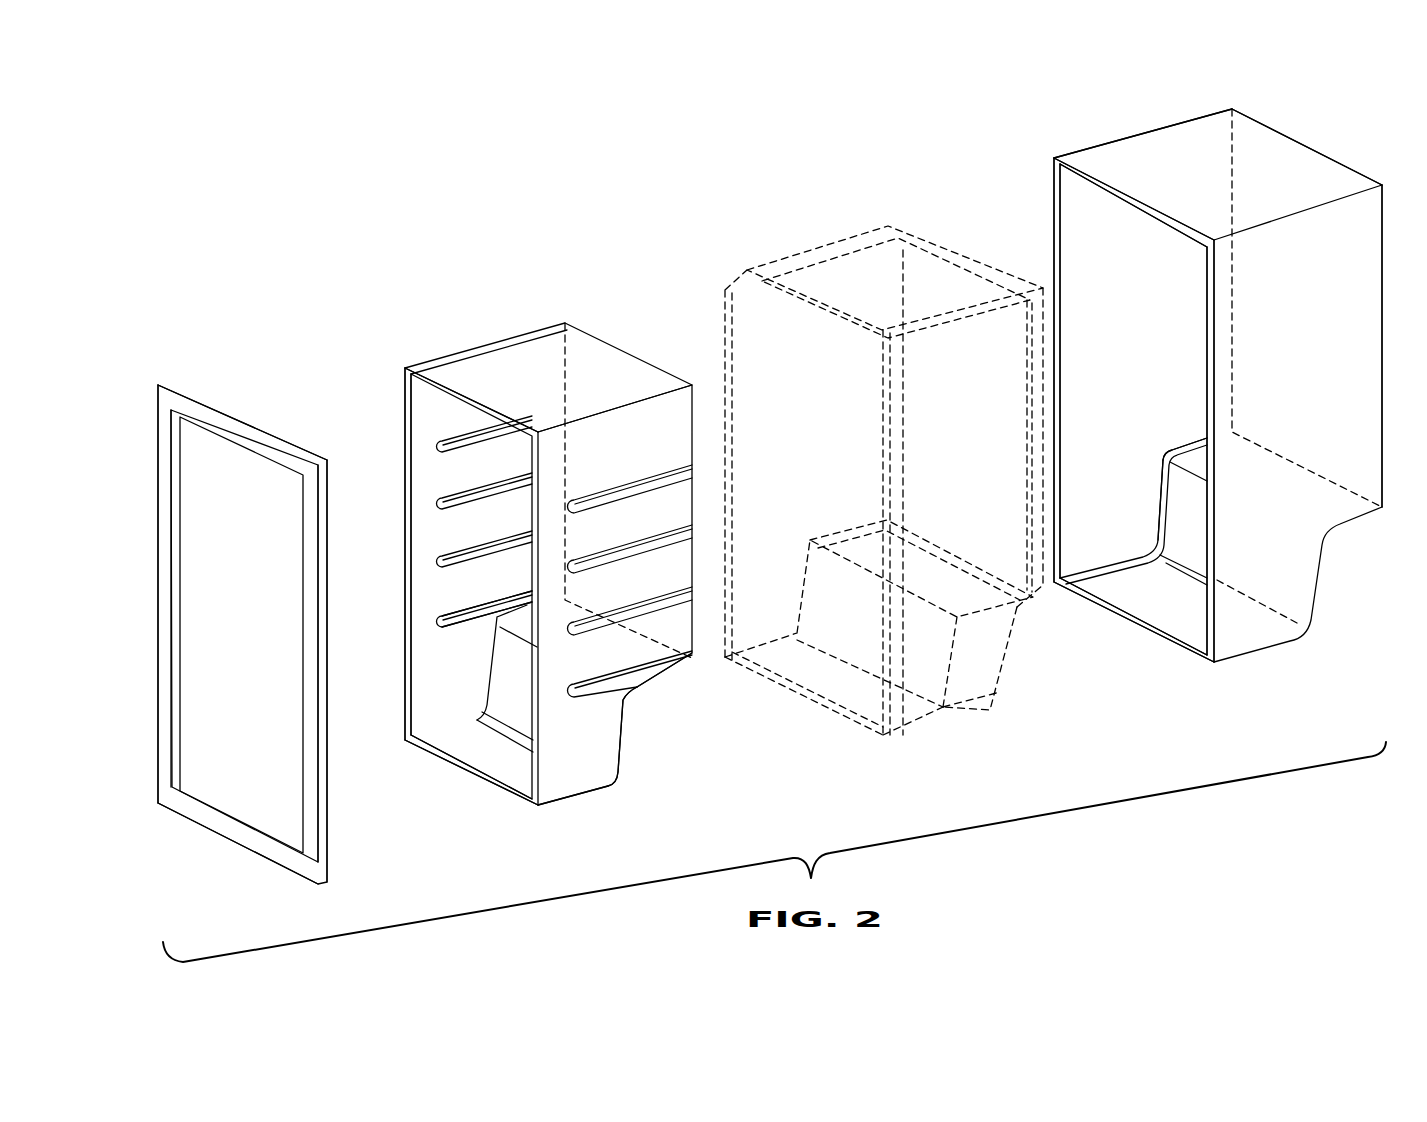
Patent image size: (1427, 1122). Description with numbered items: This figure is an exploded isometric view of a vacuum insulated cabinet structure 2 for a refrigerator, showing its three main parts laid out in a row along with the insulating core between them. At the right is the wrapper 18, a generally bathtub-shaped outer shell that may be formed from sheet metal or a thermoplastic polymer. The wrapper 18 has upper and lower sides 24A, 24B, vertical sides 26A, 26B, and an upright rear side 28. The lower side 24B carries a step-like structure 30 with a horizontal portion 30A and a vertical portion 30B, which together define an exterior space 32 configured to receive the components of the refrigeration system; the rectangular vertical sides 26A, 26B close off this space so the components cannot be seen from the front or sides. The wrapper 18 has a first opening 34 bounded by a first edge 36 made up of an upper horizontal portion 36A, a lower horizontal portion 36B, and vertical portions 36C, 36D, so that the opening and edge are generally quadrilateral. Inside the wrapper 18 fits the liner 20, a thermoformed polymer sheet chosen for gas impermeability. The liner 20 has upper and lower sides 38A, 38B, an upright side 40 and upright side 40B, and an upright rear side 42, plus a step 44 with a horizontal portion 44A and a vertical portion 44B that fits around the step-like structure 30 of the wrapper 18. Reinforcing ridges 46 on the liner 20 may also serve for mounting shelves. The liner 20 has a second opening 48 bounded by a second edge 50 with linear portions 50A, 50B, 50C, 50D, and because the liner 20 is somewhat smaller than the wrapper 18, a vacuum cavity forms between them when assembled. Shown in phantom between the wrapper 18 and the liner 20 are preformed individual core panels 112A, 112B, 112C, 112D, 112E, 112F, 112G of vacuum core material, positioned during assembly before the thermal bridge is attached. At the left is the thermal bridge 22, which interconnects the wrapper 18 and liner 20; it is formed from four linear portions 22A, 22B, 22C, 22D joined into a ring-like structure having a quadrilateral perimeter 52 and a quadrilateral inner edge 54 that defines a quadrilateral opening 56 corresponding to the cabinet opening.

The vacuum insulated cabinet structure 2 is at (1003, 100).
The wrapper 18 is at (1297, 140).
The liner 20 is at (482, 340).
The thermal bridge 22 is at (147, 408).
The linear portion 22A is at (235, 420).
The linear portion 22B is at (330, 818).
The linear portion 22C is at (232, 838).
The linear portion 22D is at (160, 660).
The upper side 24A is at (1190, 145).
The lower side 24B is at (1182, 623).
The vertical side 26A is at (1077, 198).
The vertical side 26B is at (1342, 393).
The upright rear side 28 is at (1385, 230).
The step-like structure 30 is at (1157, 450).
The horizontal portion 30A is at (1197, 452).
The vertical portion 30B is at (1170, 512).
The exterior space 32 is at (1327, 552).
The first opening 34 is at (1085, 243).
The first edge 36 is at (1052, 163).
The upper horizontal portion 36A is at (1123, 193).
The lower horizontal portion 36B is at (1090, 603).
The vertical portion 36C is at (1058, 285).
The vertical portion 36D is at (1213, 617).
The upper side 38A is at (522, 353).
The lower side 38B is at (487, 757).
The upright side 40 is at (413, 447).
The upright side 40B is at (565, 750).
The upright rear side 42 is at (697, 637).
The step 44 is at (483, 655).
The horizontal portion 44A is at (528, 630).
The vertical portion 44B is at (513, 685).
The ridges 46 is at (603, 687).
The second opening 48 is at (432, 414).
The second edge 50 is at (402, 383).
The linear portion 50A is at (450, 387).
The linear portion 50B is at (422, 750).
The linear portion 50C is at (398, 480).
The linear portion 50D is at (528, 762).
The quadrilateral perimeter 52 is at (192, 392).
The inner edge 54 is at (175, 490).
The opening 56 is at (208, 567).
The core panel 112A is at (727, 322).
The core panel 112B is at (807, 250).
The core panel 112C is at (870, 735).
The core panel 112D is at (810, 713).
The core panel 112E is at (973, 685).
The core panel 112F is at (1003, 610).
The core panel 112G is at (1020, 300).